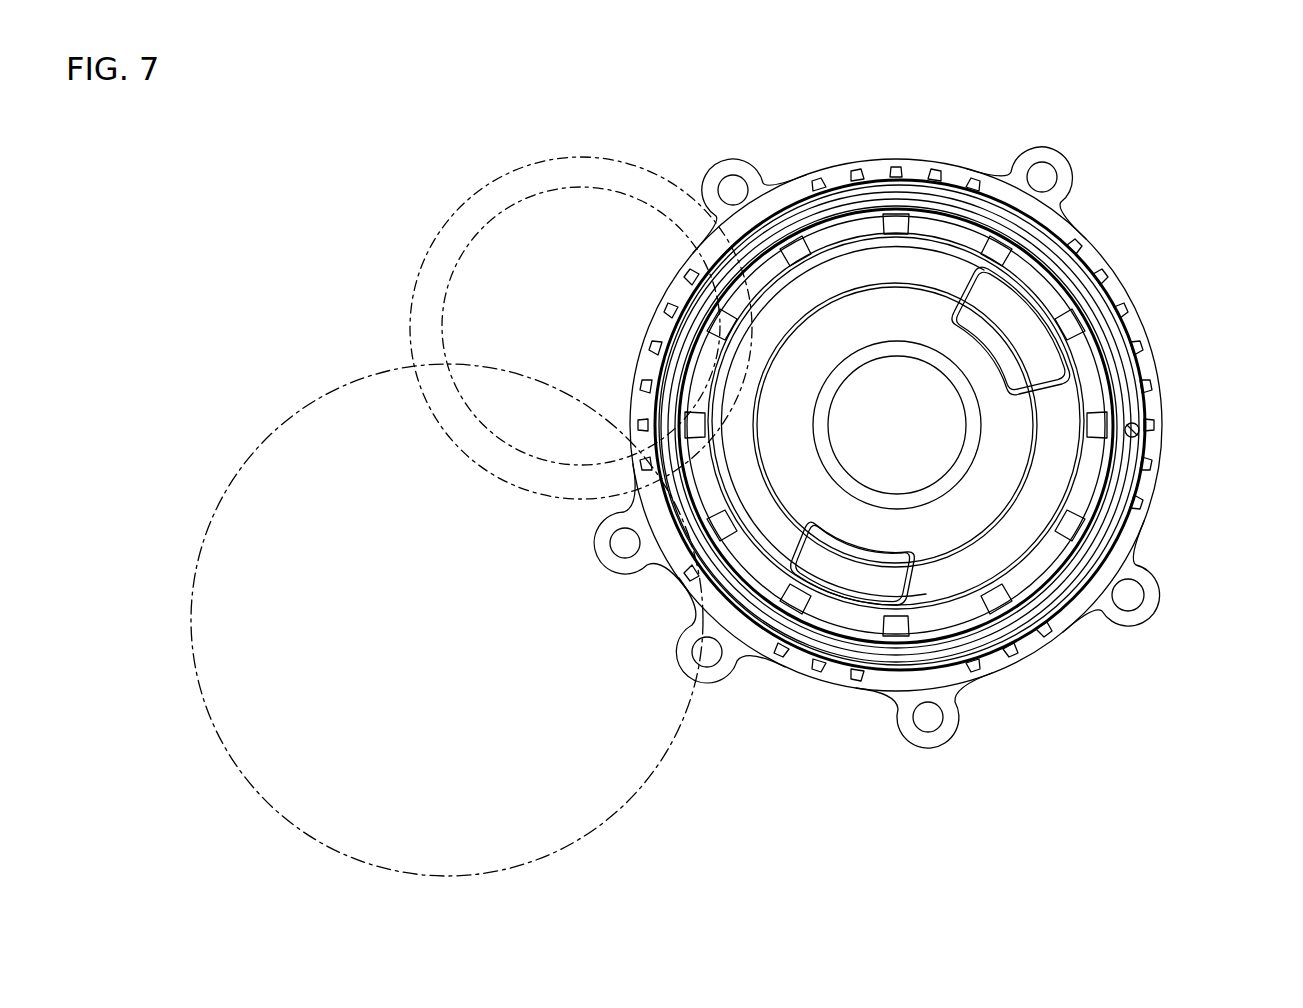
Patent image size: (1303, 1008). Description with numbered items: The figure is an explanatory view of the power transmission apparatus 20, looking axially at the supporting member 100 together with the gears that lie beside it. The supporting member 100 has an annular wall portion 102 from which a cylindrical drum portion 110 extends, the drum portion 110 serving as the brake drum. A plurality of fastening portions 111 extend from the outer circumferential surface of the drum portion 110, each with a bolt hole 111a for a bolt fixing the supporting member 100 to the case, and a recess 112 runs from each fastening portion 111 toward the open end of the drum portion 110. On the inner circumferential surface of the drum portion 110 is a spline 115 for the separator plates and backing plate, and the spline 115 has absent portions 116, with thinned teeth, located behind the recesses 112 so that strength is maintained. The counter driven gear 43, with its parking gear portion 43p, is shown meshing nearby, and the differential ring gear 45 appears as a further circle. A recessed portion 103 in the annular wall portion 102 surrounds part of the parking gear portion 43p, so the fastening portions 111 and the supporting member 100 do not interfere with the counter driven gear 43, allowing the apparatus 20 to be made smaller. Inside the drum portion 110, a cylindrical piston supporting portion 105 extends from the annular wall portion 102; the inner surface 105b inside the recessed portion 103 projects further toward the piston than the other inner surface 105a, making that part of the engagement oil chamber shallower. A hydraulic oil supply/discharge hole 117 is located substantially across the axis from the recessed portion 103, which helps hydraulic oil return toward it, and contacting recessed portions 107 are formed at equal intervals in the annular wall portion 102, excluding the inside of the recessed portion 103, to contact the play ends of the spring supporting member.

The power transmission apparatus 20 is at (243, 205).
The counter driven gear 43 is at (497, 178).
The parking gear portion 43p is at (441, 310).
The differential ring gear 45 is at (220, 490).
The supporting member 100 is at (1143, 292).
The annular wall portion 102 is at (903, 322).
The recessed portion 103 is at (735, 390).
The piston supporting portion 105 is at (1042, 587).
The inner surface 105a is at (1123, 363).
The inner surface 105b is at (693, 312).
The contacting recessed portion 107 is at (897, 623).
The drum portion 110 is at (797, 672).
The fastening portion 111 is at (718, 174).
The bolt hole 111a is at (723, 198).
The recess 112 is at (1027, 197).
The spline 115 is at (1137, 480).
The absent portion 116 is at (1000, 198).
The hydraulic oil supply/discharge hole 117 is at (1140, 427).